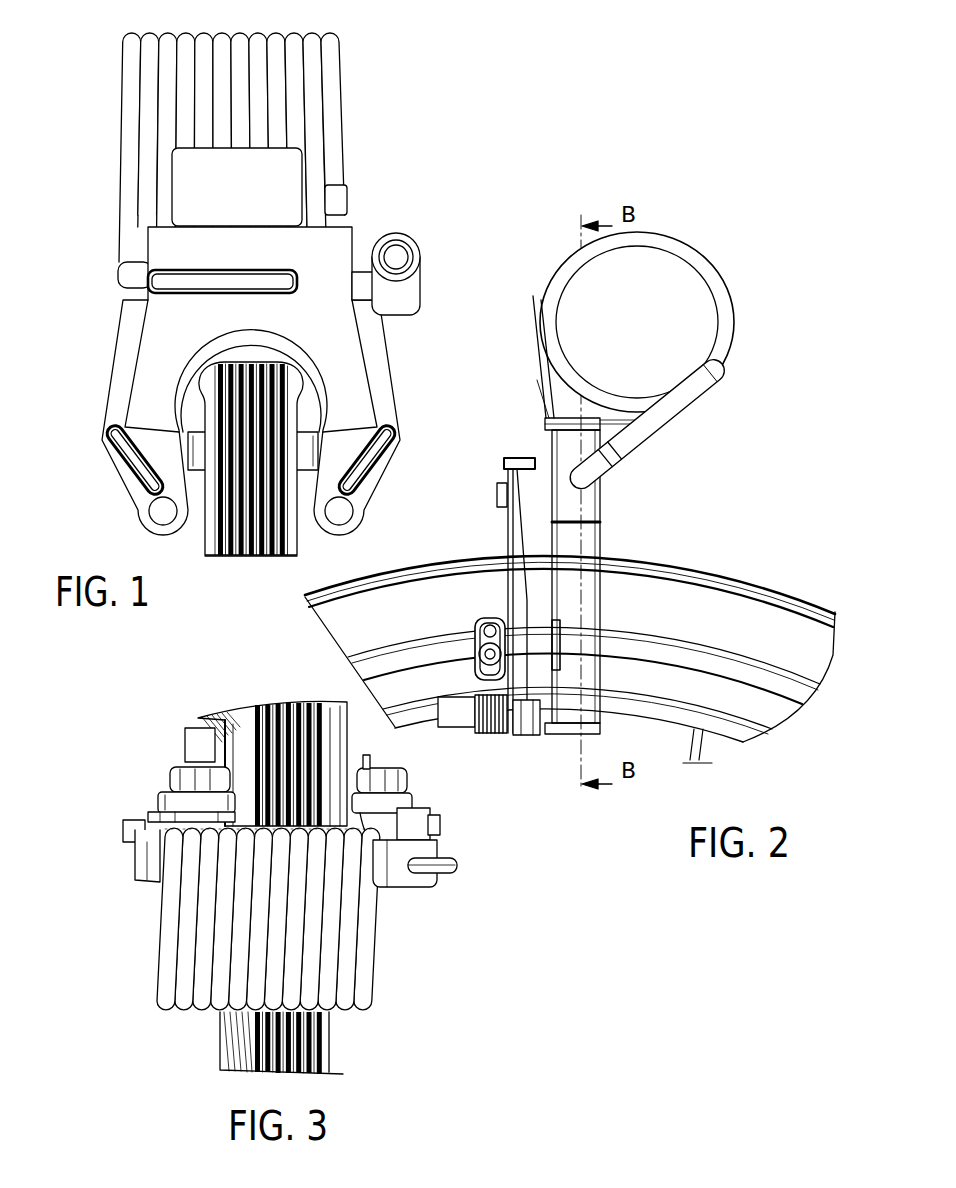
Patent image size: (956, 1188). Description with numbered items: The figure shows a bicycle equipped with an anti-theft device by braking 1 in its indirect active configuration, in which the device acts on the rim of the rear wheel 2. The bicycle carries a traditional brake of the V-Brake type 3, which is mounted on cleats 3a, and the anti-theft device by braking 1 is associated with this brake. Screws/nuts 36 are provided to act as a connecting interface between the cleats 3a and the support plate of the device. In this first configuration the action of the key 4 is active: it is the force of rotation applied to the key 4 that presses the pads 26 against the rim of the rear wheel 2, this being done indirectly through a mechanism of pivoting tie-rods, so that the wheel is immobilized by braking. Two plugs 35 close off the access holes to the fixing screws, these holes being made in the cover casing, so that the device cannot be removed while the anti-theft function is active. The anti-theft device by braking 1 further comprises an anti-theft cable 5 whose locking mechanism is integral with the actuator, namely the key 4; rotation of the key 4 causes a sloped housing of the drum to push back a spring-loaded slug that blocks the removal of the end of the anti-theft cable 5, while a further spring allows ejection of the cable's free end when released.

In FIG. 1, the anti-theft device by braking 1 is at (398, 199).
In FIG. 2, the anti-theft device by braking 1 is at (667, 513).
In FIG. 3, the anti-theft device by braking 1 is at (405, 925).
In FIG. 1, the rear wheel 2 is at (290, 540).
In FIG. 2, the rear wheel 2 is at (738, 610).
In FIG. 3, the rear wheel 2 is at (252, 1056).
In FIG. 1, the V-Brake type brake 3 is at (272, 352).
In FIG. 2, the V-Brake type brake 3 is at (516, 545).
In FIG. 3, the V-Brake type brake 3 is at (178, 797).
In FIG. 2, the cleats 3a is at (463, 724).
In FIG. 1, the key 4 is at (409, 293).
In FIG. 3, the key 4 is at (459, 866).
In FIG. 1, the anti-theft cable 5 is at (322, 137).
In FIG. 2, the anti-theft cable 5 is at (716, 312).
In FIG. 3, the anti-theft cable 5 is at (363, 983).
In FIG. 1, the pads 26 is at (217, 558).
In FIG. 1, the plugs 35 is at (346, 516).
In FIG. 2, the screws/nuts 36 is at (548, 718).